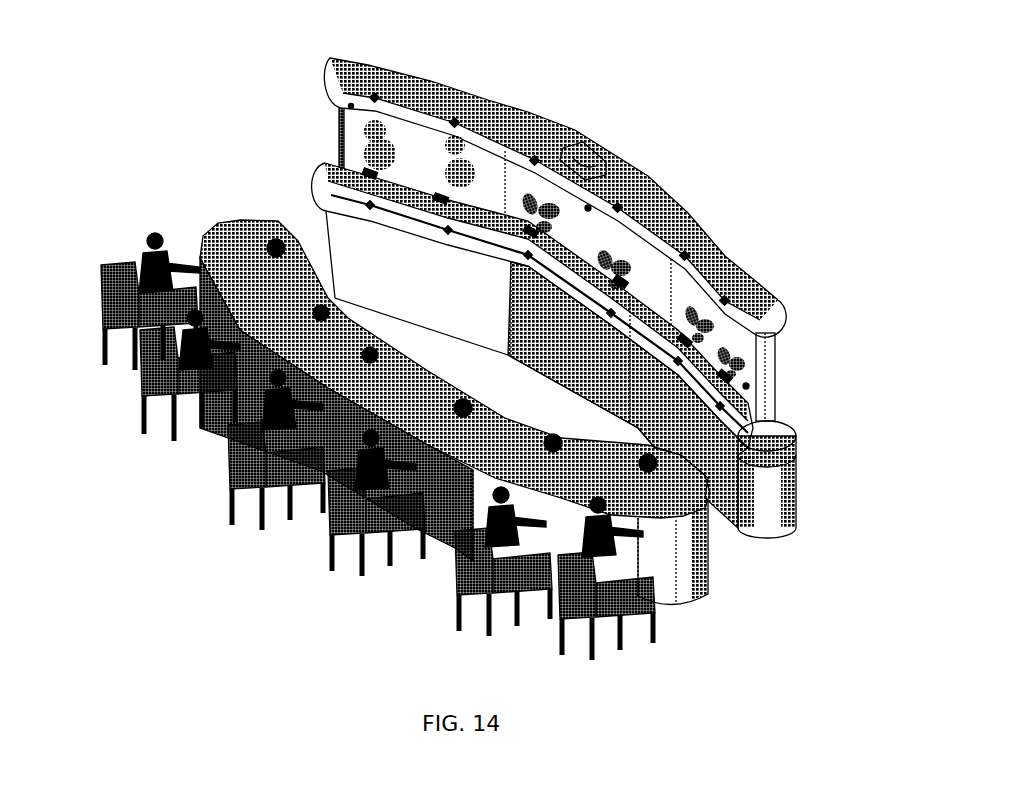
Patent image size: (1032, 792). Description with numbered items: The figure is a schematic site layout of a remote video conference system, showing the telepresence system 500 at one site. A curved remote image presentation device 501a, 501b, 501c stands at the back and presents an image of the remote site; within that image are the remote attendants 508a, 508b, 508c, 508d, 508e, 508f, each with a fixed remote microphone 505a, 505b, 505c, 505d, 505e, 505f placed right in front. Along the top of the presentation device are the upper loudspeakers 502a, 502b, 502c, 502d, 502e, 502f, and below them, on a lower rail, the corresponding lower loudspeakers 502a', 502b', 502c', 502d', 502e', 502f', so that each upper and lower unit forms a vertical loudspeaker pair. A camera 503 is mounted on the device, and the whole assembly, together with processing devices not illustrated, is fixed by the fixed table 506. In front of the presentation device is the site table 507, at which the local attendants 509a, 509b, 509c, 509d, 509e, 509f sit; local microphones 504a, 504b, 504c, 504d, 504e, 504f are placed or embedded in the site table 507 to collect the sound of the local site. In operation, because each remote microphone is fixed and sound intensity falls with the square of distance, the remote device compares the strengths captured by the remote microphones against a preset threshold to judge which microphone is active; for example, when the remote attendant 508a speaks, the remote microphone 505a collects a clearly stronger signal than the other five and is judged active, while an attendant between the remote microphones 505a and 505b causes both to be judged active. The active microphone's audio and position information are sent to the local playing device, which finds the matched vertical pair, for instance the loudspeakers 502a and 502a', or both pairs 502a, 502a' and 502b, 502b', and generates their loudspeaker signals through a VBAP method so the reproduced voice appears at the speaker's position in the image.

The telepresence system 500 is at (93, 132).
The remote image presentation device 501a is at (343, 98).
The remote image presentation device 501b is at (580, 200).
The remote image presentation device 501c is at (738, 378).
The loudspeaker 502a is at (391, 59).
The loudspeaker 502b is at (449, 72).
The loudspeaker 502c is at (545, 91).
The loudspeaker 502d is at (665, 181).
The loudspeaker 502e is at (727, 222).
The loudspeaker 502f is at (774, 268).
The loudspeaker 502a' is at (366, 226).
The loudspeaker 502b' is at (433, 246).
The loudspeaker 502c' is at (495, 274).
The loudspeaker 502d' is at (584, 322).
The loudspeaker 502e' is at (659, 379).
The loudspeaker 502f' is at (701, 421).
The camera 503 is at (585, 148).
The local microphone 504a is at (269, 261).
The local microphone 504b is at (306, 321).
The local microphone 504c is at (358, 367).
The local microphone 504d is at (464, 416).
The local microphone 504e is at (552, 454).
The local microphone 504f is at (638, 471).
The remote microphone 505a is at (358, 168).
The remote microphone 505b is at (431, 193).
The remote microphone 505c is at (527, 228).
The remote microphone 505d is at (614, 278).
The remote microphone 505e is at (679, 336).
The remote microphone 505f is at (750, 397).
The fixed table 506 is at (790, 462).
The site table 507 is at (687, 550).
The attendant at the remote site 508a is at (352, 132).
The attendant at the remote site 508b is at (455, 142).
The attendant at the remote site 508c is at (545, 180).
The attendant at the remote site 508d is at (633, 237).
The attendant at the remote site 508e is at (703, 282).
The attendant at the remote site 508f is at (740, 357).
The attendant at the local site 509a is at (133, 248).
The attendant at the local site 509b is at (183, 400).
The attendant at the local site 509c is at (283, 490).
The attendant at the local site 509d is at (373, 540).
The attendant at the local site 509e is at (463, 600).
The attendant at the local site 509f is at (600, 613).